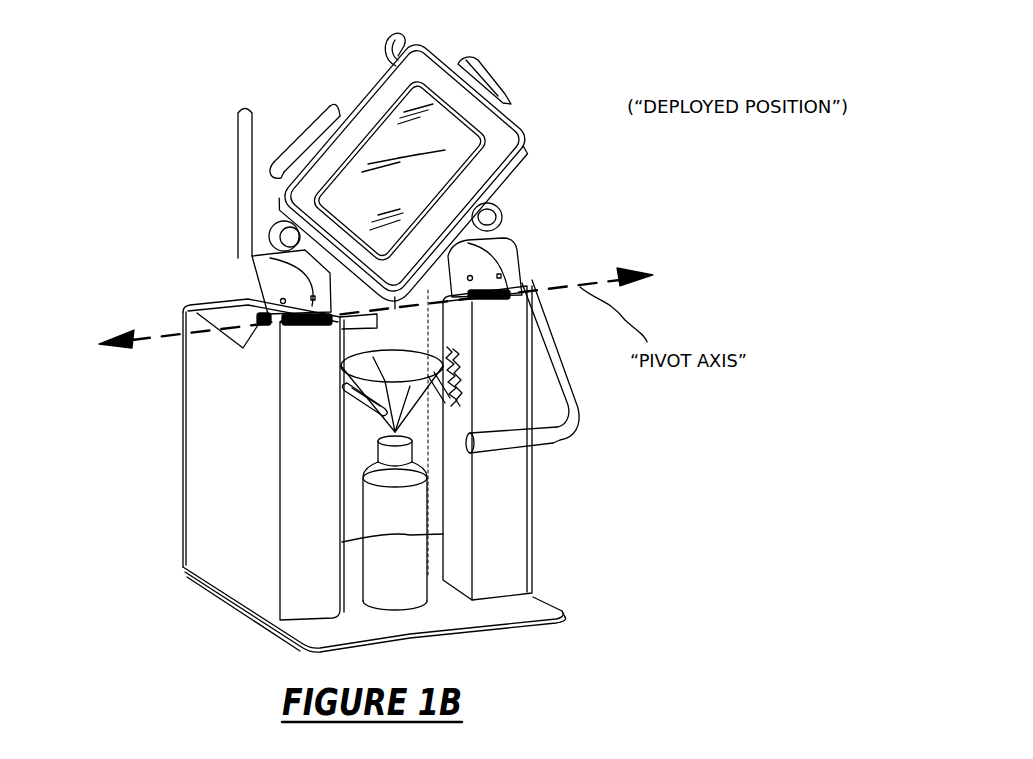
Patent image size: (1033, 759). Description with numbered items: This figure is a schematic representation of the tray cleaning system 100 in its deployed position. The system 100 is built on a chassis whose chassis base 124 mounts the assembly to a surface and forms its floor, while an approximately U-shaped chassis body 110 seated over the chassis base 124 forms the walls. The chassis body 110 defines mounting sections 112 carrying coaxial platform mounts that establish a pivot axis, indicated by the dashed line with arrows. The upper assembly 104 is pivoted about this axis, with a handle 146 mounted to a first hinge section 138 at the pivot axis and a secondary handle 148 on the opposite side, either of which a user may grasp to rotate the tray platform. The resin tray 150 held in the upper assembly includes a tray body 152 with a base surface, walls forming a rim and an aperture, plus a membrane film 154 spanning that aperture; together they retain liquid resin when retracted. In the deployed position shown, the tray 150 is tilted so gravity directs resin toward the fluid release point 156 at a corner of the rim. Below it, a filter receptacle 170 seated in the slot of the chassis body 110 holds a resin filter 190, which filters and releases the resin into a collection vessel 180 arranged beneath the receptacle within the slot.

The tray cleaning system 100 is at (600, 116).
The upper assembly 104 is at (346, 319).
The chassis body 110 is at (232, 515).
The mounting sections 112 is at (503, 279).
The chassis base 124 is at (530, 612).
The hinge sections 138 is at (252, 262).
The handle 146 is at (558, 437).
The secondary handle 148 is at (366, 88).
The resin tray 150 is at (377, 165).
The tray body 152 is at (393, 167).
The membrane film 154 is at (381, 105).
The fluid release point 156 is at (506, 230).
The filter receptacle 170 is at (335, 413).
The collection vessel 180 is at (410, 577).
The resin filter 190 is at (400, 356).